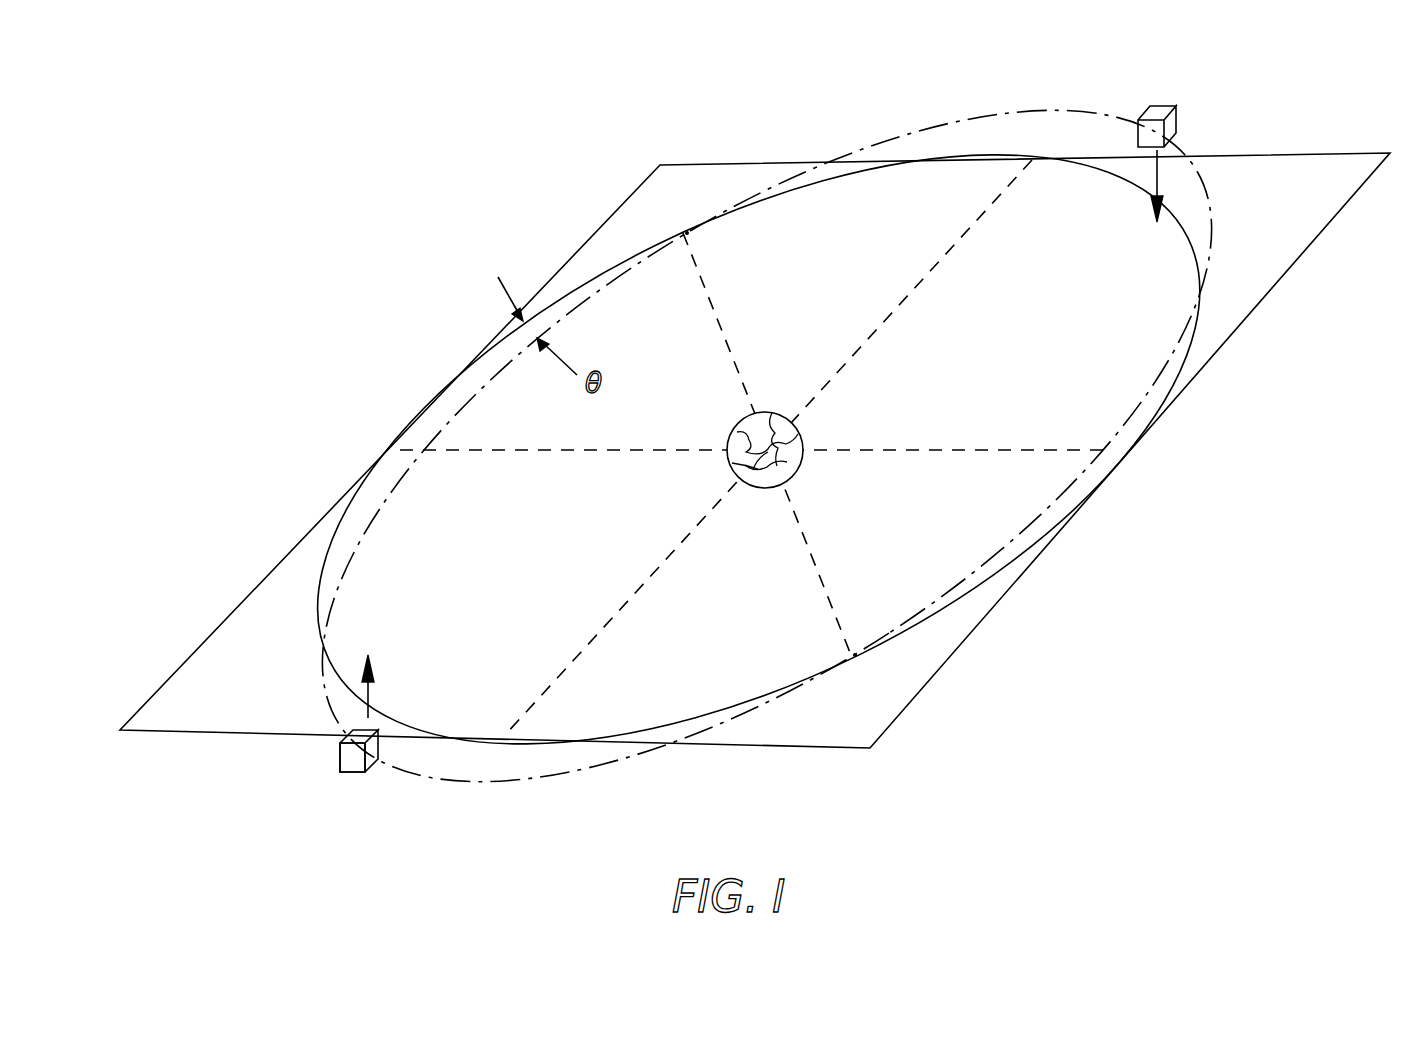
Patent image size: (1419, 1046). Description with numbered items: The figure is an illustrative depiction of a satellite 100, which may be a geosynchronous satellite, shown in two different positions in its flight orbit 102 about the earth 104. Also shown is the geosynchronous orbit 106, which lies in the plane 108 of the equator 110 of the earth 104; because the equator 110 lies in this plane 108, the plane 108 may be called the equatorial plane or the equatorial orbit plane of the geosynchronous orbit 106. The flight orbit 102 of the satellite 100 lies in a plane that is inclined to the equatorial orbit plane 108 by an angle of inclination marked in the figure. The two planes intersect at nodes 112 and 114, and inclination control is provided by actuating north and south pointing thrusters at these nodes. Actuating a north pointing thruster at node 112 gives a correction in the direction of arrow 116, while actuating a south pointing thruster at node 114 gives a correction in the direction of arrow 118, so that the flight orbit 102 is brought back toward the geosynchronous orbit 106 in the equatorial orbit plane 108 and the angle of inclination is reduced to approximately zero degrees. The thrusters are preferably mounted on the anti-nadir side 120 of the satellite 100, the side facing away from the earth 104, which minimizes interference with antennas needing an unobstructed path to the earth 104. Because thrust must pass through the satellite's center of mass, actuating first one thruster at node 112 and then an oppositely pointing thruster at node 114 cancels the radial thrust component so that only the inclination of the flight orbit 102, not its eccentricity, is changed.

The satellite 100 is at (1181, 86).
The flight orbit 102 is at (910, 133).
The earth 104 is at (798, 436).
The geosynchronous orbit 106 is at (992, 575).
The plane 108 is at (1277, 282).
The equator 110 is at (757, 472).
The node 112 is at (855, 656).
The node 114 is at (687, 233).
The arrow 116 is at (1152, 178).
The arrow 118 is at (372, 687).
The anti-nadir side 120 is at (345, 757).